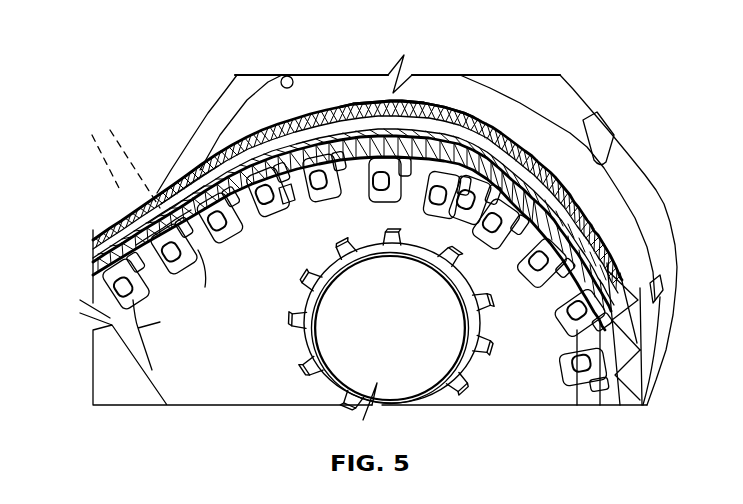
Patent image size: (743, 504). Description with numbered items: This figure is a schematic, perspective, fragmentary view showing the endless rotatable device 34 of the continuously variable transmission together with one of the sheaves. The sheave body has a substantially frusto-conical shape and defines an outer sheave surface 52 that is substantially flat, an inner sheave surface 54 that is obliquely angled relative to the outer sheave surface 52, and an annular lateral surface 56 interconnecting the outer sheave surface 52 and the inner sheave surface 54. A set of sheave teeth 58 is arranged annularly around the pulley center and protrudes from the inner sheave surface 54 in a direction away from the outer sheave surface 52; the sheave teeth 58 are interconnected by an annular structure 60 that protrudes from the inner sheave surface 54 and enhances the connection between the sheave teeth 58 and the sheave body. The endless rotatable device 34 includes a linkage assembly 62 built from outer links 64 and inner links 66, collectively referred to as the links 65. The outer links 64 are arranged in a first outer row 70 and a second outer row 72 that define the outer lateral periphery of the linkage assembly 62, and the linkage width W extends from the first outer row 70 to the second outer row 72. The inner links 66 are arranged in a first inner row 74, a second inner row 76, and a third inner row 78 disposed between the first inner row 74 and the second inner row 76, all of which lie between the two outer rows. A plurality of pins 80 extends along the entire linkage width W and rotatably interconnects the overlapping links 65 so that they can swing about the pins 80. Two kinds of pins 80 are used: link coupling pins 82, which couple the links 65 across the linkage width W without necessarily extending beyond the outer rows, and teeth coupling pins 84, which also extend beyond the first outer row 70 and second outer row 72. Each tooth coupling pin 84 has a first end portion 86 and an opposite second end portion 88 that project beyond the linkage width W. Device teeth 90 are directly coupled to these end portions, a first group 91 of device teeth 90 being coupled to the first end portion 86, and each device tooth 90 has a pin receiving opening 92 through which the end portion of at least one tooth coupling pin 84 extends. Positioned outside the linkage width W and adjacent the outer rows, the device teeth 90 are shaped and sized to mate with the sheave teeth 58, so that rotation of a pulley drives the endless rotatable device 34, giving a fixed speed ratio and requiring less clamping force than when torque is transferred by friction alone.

The linkage width W is at (93, 137).
The endless rotatable device 34 is at (212, 172).
The outer sheave surface 52 is at (563, 86).
The inner sheave surface 54 is at (600, 197).
The annular lateral surface 56 is at (575, 118).
The sheave teeth 58 is at (300, 338).
The annular structure 60 is at (472, 367).
The linkage assembly 62 is at (190, 175).
The outer links 64 is at (366, 167).
The links 65 is at (170, 213).
The inner links 66 is at (323, 137).
The first outer row 70 is at (541, 309).
The second outer row 72 is at (431, 104).
The first inner row 74 is at (205, 280).
The second inner row 76 is at (171, 200).
The third inner row 78 is at (655, 238).
The pins 80 is at (193, 250).
The link coupling pins 82 is at (289, 195).
The teeth coupling pins 84 is at (282, 208).
The first end portion 86 is at (441, 207).
The second end portion 88 is at (472, 119).
The device teeth 90 is at (330, 201).
The first group 91 is at (153, 311).
The pin receiving opening 92 is at (592, 261).